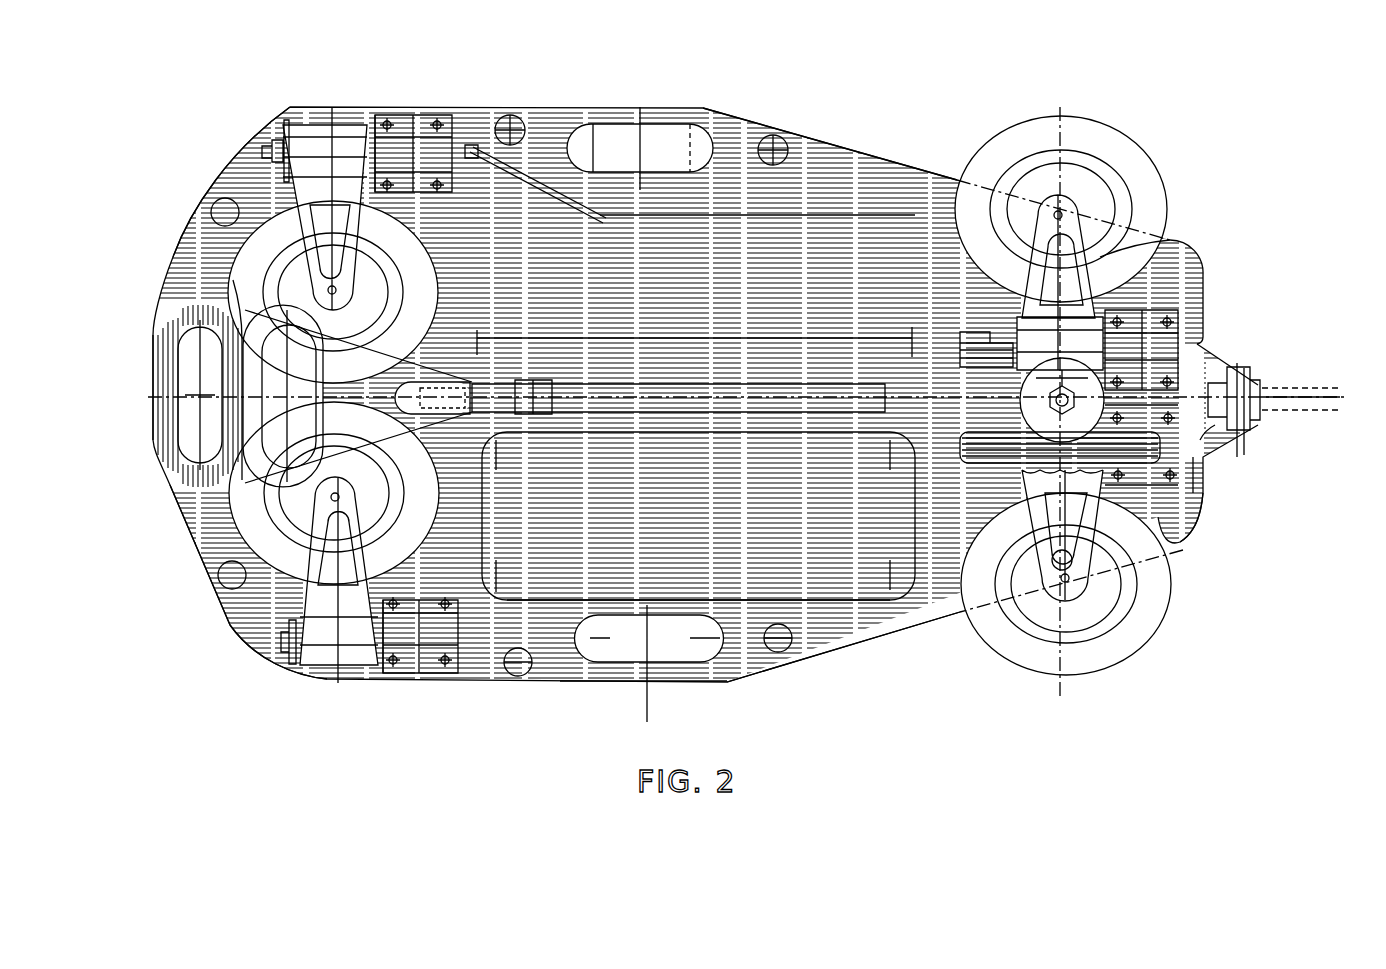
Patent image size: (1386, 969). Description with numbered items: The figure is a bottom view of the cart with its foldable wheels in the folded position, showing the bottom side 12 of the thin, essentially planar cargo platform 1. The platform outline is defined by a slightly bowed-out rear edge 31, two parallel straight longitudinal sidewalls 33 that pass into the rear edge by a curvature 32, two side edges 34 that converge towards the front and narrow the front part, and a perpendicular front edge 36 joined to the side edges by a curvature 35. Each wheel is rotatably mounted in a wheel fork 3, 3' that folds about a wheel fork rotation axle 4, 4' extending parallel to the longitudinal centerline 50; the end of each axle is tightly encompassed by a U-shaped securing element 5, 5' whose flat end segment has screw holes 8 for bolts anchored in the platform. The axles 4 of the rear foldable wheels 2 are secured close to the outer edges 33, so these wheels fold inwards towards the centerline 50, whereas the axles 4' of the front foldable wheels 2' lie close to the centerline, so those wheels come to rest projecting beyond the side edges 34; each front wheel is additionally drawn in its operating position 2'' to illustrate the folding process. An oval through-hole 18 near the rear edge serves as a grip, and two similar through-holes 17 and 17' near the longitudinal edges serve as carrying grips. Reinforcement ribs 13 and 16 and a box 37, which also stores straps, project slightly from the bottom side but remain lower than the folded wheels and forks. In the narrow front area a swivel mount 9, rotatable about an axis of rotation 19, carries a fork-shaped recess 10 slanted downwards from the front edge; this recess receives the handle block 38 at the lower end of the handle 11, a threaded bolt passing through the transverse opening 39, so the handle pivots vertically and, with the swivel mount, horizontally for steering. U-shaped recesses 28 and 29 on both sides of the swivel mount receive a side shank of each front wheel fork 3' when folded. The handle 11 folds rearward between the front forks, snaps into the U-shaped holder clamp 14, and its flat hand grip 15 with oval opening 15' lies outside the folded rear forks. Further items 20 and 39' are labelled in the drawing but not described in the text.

The cargo platform 1 is at (740, 672).
The rear foldable wheels 2 is at (348, 392).
The front foldable wheels 2' is at (1098, 397).
The operating position of front foldable wheels 2'' is at (1031, 420).
The wheel fork 3 is at (347, 395).
The wheel fork 3' is at (1079, 386).
The wheel fork rotation axle 4 is at (275, 429).
The wheel fork rotation axle 4' is at (1034, 393).
The securing element 5 is at (386, 409).
The securing element 5' is at (1145, 371).
The screw holes 8 is at (445, 126).
The swivel mount 9 is at (1210, 513).
The recess 10 is at (1240, 455).
The handle 11 is at (668, 385).
The bottom side 12 is at (568, 662).
The reinforcement rib 13 is at (645, 213).
The holder clamp 14 is at (472, 384).
The hand grip 15 is at (358, 447).
The oval opening 15' is at (200, 395).
The reinforcement rib 16 is at (635, 338).
The through-hole 17 is at (649, 665).
The through-hole 17' is at (640, 112).
The oval through-hole 18 is at (152, 428).
The axis of rotation 19 is at (1050, 404).
The holes 20 is at (210, 215).
The U-shaped recess 28 is at (915, 545).
The U-shaped recess 29 is at (1165, 251).
The rear edge 31 is at (202, 570).
The curvature 32 is at (255, 135).
The longitudinal sidewalls 33 is at (445, 115).
The side edges 34 is at (795, 136).
The curvature 35 is at (1195, 263).
The front edge 36 is at (1205, 480).
The box 37 is at (822, 600).
The handle block 38 is at (1240, 368).
The through-going opening 39 is at (1227, 384).
The bolt 39' is at (1194, 440).
The longitudinal centerline 50 is at (620, 386).